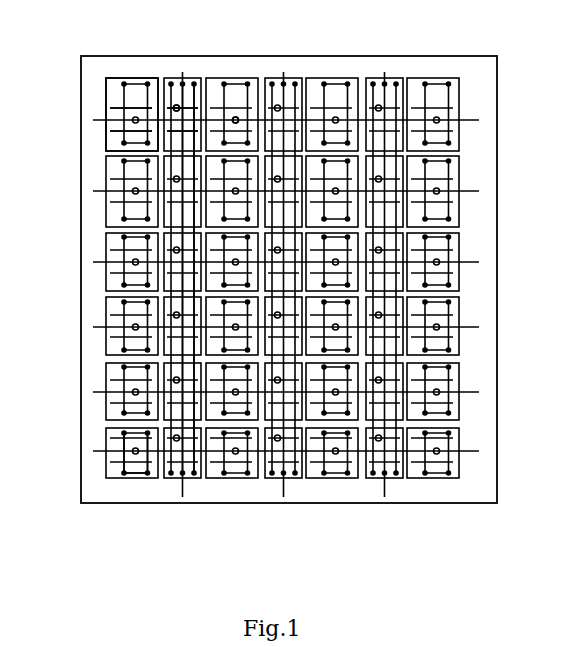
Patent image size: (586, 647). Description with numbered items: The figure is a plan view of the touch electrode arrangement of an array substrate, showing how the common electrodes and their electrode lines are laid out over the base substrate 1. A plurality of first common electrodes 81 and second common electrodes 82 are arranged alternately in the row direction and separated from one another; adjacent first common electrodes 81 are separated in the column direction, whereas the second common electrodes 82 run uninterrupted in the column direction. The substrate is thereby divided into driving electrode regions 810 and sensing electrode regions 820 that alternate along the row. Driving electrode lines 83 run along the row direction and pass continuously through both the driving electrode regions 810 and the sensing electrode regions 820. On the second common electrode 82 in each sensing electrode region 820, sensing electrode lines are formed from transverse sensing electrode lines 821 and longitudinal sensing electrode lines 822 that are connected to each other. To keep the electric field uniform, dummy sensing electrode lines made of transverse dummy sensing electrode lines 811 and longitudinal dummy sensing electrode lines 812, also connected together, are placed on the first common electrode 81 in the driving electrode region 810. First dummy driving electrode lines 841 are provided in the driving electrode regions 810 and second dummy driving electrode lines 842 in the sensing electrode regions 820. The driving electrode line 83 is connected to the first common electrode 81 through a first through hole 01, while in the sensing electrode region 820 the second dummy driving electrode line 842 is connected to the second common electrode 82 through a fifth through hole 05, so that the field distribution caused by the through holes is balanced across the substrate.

The base substrate 1 is at (420, 56).
The first through hole 01 is at (237, 117).
The fifth through hole 05 is at (176, 105).
The first common electrode 81 is at (118, 95).
The driving electrode region 810 is at (128, 73).
The transverse dummy sensing electrode line 811 is at (141, 474).
The longitudinal dummy sensing electrode line 812 is at (124, 462).
The second common electrode 82 is at (186, 83).
The sensing electrode region 820 is at (183, 84).
The transverse sensing electrode line 821 is at (183, 475).
The longitudinal sensing electrode line 822 is at (193, 475).
The driving electrode line 83 is at (100, 120).
The first dummy driving electrode line 841 is at (110, 131).
The second dummy driving electrode line 842 is at (177, 130).